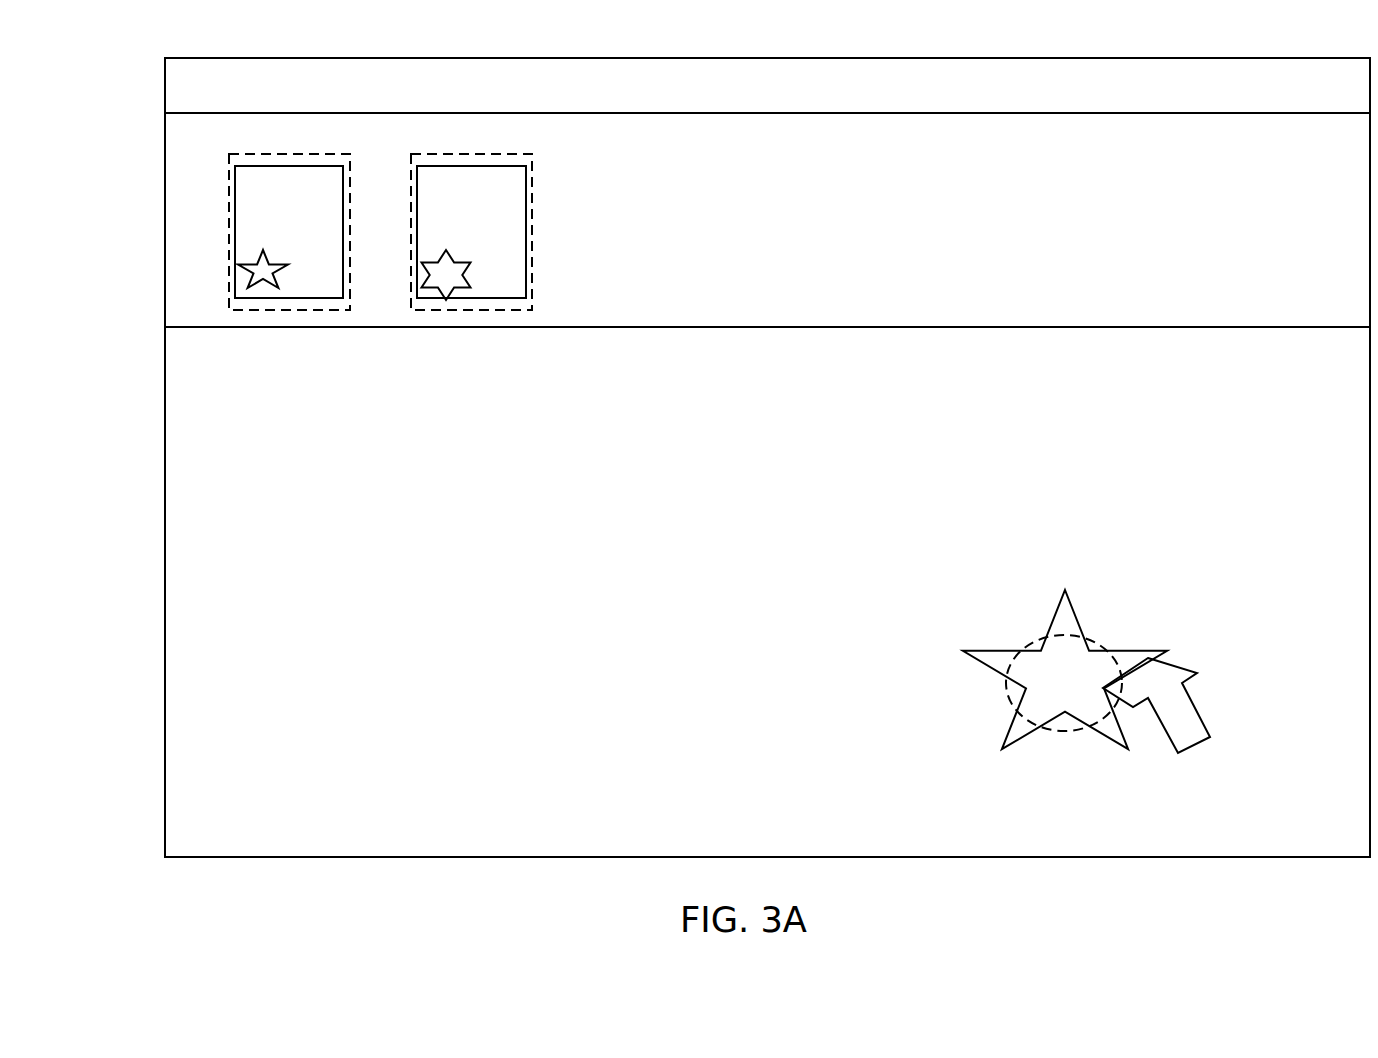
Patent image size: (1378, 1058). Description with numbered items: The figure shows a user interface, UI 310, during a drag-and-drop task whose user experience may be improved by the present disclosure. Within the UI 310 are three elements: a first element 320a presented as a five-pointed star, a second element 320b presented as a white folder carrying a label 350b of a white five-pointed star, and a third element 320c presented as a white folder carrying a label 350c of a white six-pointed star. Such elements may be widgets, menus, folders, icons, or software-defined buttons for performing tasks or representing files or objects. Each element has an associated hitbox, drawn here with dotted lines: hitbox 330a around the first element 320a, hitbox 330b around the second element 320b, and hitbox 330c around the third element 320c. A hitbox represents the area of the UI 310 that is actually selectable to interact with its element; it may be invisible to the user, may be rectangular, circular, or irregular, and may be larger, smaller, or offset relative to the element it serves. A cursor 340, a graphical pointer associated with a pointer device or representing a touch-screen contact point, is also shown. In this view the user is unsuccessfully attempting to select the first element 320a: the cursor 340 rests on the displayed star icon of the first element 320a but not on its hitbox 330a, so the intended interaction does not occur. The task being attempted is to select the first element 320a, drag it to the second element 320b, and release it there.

The UI 310 is at (862, 68).
The first element 320a is at (1008, 720).
The second element 320b is at (295, 184).
The third element 320c is at (502, 225).
The hitbox 330a is at (1032, 642).
The hitbox 330b is at (250, 311).
The hitbox 330c is at (495, 311).
The cursor 340 is at (1200, 710).
The label 350b is at (270, 282).
The label 350c is at (461, 292).